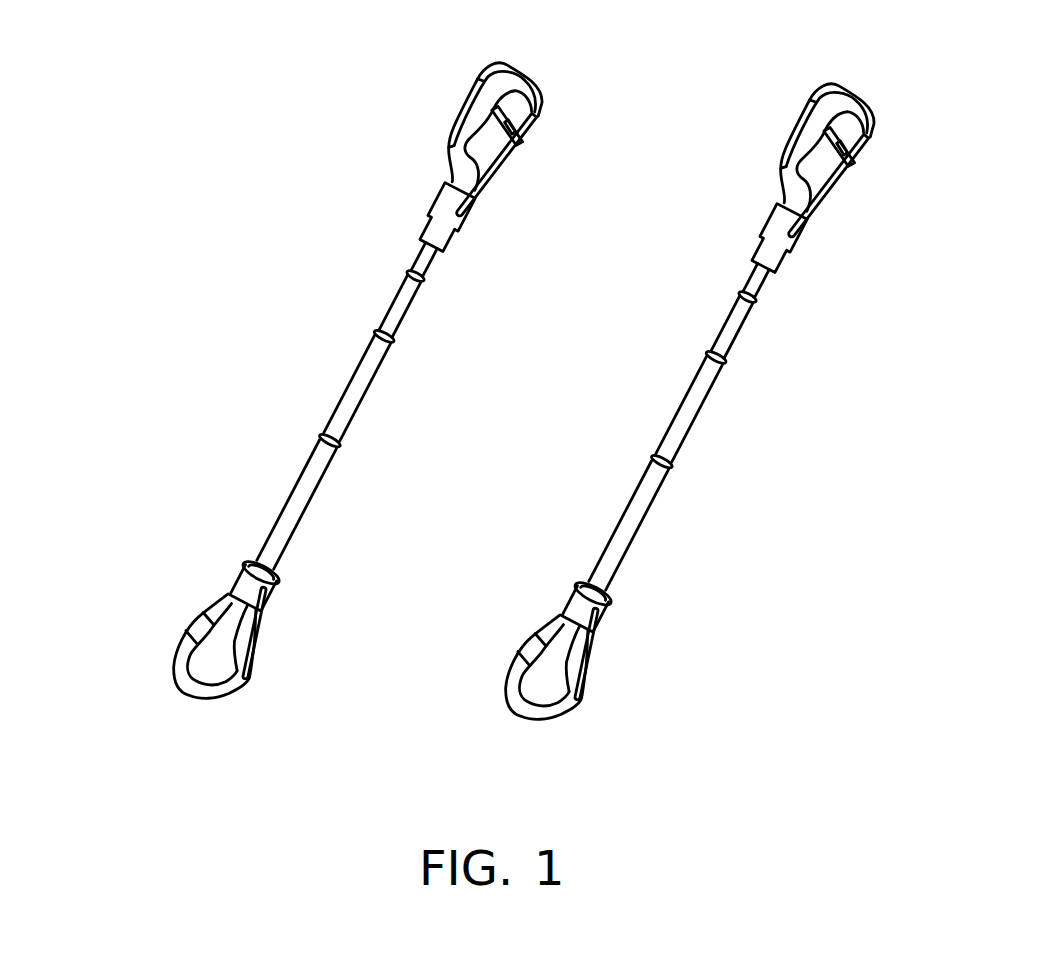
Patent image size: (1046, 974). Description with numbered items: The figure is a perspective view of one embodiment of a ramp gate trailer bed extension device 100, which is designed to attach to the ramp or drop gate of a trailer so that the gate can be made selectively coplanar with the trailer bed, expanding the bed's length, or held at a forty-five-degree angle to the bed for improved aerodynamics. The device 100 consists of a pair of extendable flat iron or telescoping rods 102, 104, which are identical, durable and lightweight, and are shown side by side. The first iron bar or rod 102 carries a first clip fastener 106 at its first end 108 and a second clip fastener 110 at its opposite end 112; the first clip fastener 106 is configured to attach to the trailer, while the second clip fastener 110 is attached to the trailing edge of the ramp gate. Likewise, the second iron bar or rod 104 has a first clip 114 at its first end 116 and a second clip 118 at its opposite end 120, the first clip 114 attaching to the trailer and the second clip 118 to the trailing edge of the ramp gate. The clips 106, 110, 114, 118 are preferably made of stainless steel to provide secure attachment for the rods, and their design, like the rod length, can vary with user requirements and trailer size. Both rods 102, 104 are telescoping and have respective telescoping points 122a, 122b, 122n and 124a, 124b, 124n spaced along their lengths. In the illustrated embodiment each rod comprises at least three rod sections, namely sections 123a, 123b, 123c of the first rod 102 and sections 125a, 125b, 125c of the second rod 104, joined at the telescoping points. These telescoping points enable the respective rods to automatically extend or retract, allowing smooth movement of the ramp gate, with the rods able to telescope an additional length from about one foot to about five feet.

The ramp gate trailer bed extension device 100 is at (183, 305).
The first telescoping rod 102 is at (292, 240).
The second telescoping rod 104 is at (638, 285).
The first clip fastener 106 is at (470, 85).
The first end 108 is at (436, 205).
The second clip fastener 110 is at (183, 630).
The opposite end 112 is at (266, 590).
The first clip 114 is at (793, 116).
The first end 116 is at (799, 237).
The second clip 118 is at (505, 664).
The opposite end 120 is at (603, 610).
The telescoping point 122a is at (409, 273).
The telescoping point 122b is at (378, 333).
The telescoping point 122n is at (321, 434).
The rod section 123a is at (428, 267).
The rod section 123b is at (408, 313).
The rod section 123c is at (355, 413).
The telescoping point 124a is at (741, 292).
The telescoping point 124b is at (710, 352).
The telescoping point 124n is at (655, 453).
The rod section 125a is at (759, 289).
The rod section 125b is at (739, 335).
The rod section 125c is at (688, 433).